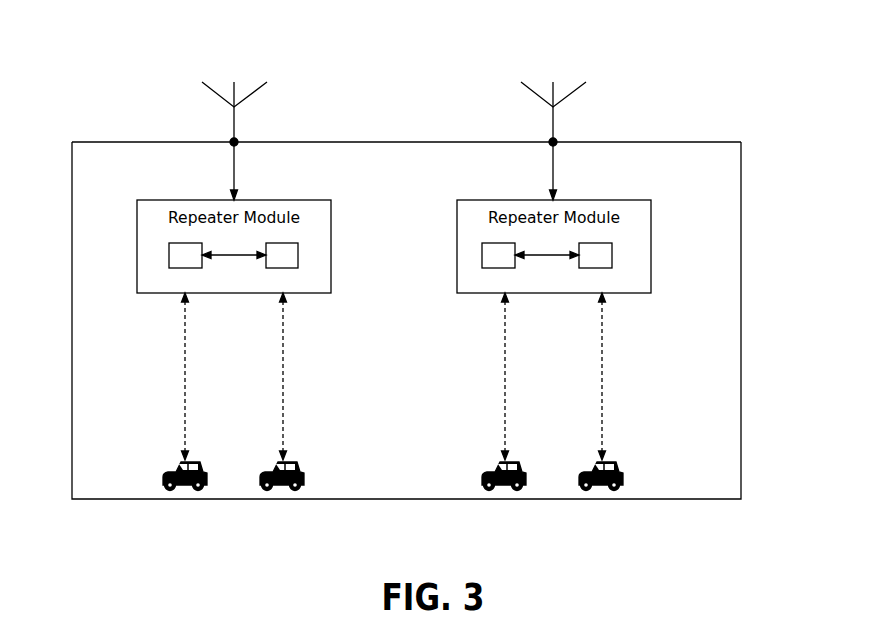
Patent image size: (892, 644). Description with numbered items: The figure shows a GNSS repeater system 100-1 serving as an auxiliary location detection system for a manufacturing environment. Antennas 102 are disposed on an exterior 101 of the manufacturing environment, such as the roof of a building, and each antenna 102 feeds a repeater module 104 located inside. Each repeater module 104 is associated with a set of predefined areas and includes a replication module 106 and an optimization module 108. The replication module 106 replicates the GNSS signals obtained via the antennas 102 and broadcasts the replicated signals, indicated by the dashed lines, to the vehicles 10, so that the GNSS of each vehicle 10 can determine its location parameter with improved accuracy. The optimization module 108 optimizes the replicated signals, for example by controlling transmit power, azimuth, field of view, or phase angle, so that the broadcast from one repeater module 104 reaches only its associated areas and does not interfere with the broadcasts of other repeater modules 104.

The GNSS repeater system 100-1 is at (732, 88).
The exterior 101 is at (408, 141).
The antenna 102 is at (280, 97).
The repeater module 104 is at (288, 200).
The replication module 106 is at (169, 258).
The optimization module 108 is at (298, 255).
The vehicle 10 is at (200, 462).